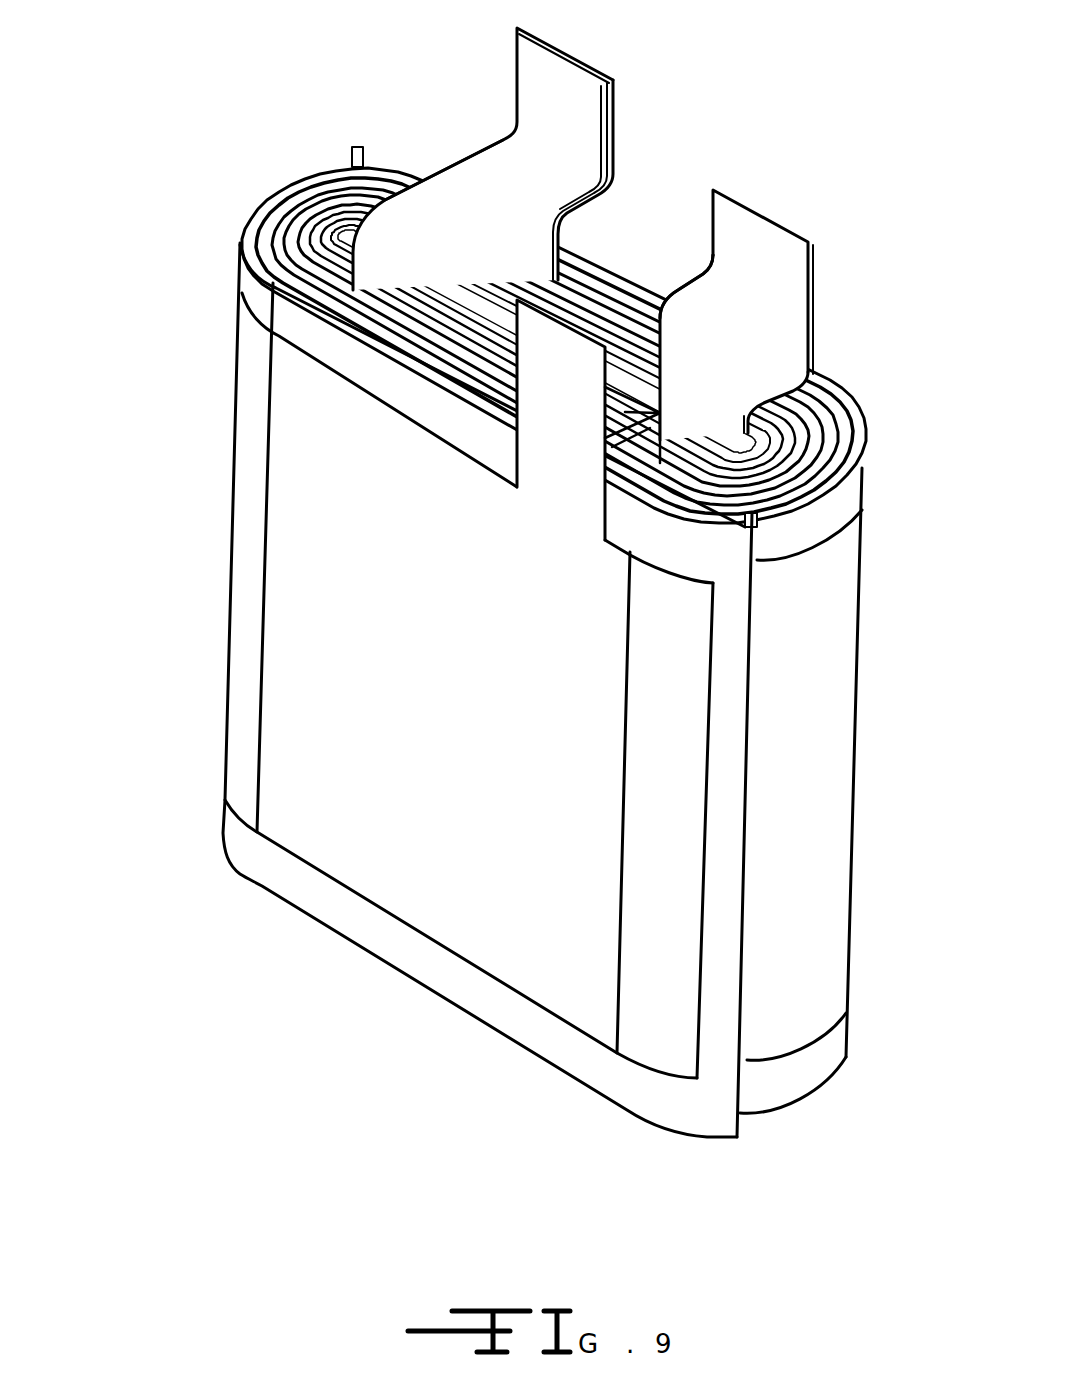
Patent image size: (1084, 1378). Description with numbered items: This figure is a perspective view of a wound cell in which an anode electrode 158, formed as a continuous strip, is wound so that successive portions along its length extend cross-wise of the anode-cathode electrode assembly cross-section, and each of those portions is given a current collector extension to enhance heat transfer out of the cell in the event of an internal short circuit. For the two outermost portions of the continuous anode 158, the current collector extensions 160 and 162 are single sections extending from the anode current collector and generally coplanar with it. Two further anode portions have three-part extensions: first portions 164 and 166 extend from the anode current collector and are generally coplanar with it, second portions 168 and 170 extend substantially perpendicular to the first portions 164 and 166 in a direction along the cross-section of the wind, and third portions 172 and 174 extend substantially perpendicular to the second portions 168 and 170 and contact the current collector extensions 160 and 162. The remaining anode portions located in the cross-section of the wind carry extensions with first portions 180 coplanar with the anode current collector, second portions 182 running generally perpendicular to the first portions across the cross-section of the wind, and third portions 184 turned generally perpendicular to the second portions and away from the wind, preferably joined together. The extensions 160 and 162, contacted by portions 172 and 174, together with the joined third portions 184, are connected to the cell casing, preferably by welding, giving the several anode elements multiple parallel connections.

The anode electrode 158 is at (305, 424).
The current collector extension 160 is at (582, 436).
The current collector extension 162 is at (812, 342).
The first portion 164 is at (645, 440).
The first portion 166 is at (716, 362).
The second portion 168 is at (745, 439).
The second portion 170 is at (705, 310).
The third portion 172 is at (570, 313).
The third portion 174 is at (766, 256).
The first portions 180 is at (476, 284).
The second portions 182 is at (468, 180).
The third portions 184 is at (616, 112).